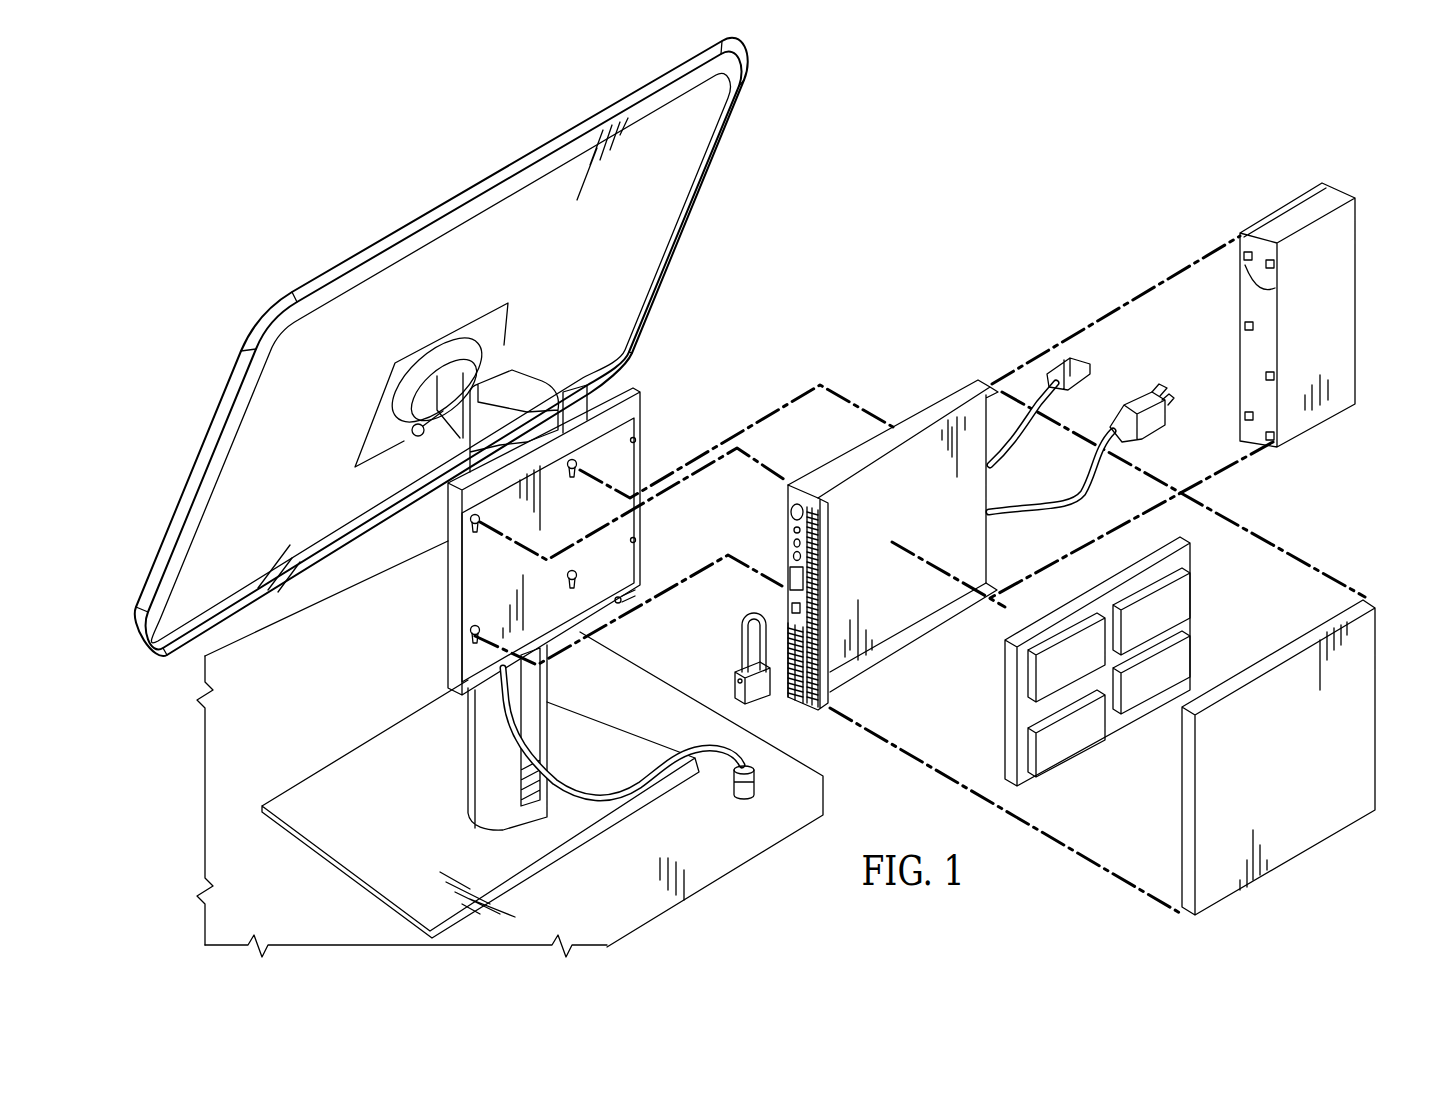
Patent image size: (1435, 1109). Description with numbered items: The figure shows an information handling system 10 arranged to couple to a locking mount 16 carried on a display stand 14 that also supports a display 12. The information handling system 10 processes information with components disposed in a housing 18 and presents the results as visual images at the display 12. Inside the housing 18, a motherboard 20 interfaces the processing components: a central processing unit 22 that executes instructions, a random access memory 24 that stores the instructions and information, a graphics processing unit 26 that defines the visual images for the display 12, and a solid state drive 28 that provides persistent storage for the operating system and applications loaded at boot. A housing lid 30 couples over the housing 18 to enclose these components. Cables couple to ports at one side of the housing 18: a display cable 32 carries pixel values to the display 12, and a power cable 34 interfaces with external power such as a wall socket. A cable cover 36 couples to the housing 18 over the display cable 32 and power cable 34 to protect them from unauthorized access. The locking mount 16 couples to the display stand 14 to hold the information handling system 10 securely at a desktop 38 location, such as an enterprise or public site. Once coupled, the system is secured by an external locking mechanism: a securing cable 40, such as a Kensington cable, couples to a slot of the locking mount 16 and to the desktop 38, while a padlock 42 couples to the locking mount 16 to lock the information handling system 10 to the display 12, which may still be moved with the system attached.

The information handling system 10 is at (920, 494).
The display 12 is at (441, 347).
The display stand 14 is at (472, 630).
The locking mount 16 is at (499, 541).
The housing 18 is at (893, 522).
The motherboard 20 is at (1023, 661).
The central processing unit (CPU) 22 is at (1070, 597).
The random access memory (RAM) 24 is at (1052, 755).
The graphics processing unit (GPU) 26 is at (1177, 580).
The solid state drive (SSD) 28 is at (1193, 652).
The housing lid 30 is at (1292, 764).
The display cable 32 is at (1008, 359).
The power cable 34 is at (1096, 402).
The cable cover 36 is at (1294, 272).
The desktop 38 is at (510, 749).
The securing cable 40 is at (654, 815).
The padlock 42 is at (733, 594).